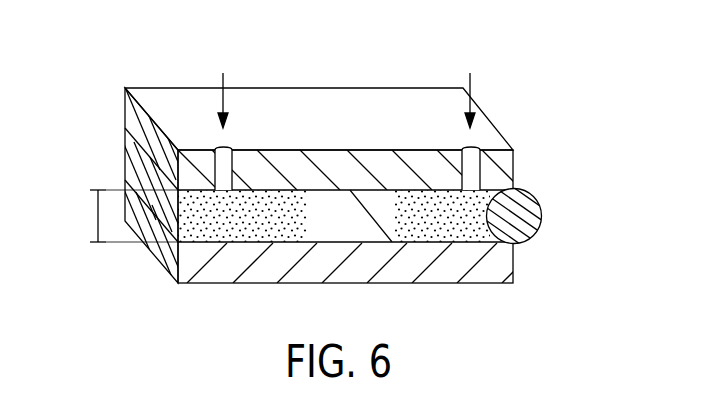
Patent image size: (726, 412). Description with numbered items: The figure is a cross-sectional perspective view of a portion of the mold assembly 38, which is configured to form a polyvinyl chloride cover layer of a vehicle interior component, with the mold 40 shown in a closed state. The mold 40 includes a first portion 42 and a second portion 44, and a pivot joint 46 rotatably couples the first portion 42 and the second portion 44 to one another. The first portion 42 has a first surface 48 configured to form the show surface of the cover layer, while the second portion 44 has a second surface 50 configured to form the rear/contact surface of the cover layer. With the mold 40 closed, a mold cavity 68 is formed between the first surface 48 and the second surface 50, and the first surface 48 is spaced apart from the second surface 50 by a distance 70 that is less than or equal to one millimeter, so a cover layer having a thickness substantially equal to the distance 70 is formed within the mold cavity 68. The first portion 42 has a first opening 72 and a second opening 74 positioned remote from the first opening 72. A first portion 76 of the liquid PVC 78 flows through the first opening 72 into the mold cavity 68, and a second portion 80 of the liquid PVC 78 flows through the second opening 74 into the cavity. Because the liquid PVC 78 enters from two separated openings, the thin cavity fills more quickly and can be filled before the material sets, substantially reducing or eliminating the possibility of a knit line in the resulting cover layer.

The mold assembly 38 is at (336, 177).
The mold 40 is at (336, 177).
The first portion 42 is at (331, 178).
The second portion 44 is at (503, 268).
The pivot joint 46 is at (528, 203).
The first surface 48 is at (356, 189).
The second surface 50 is at (338, 236).
The mold cavity 68 is at (324, 202).
The distance 70 is at (97, 217).
The first opening 72 is at (213, 158).
The second opening 74 is at (481, 153).
The first portion of the liquid PVC 76 is at (212, 231).
The liquid PVC 78 is at (225, 83).
The second portion of the liquid PVC 80 is at (457, 221).